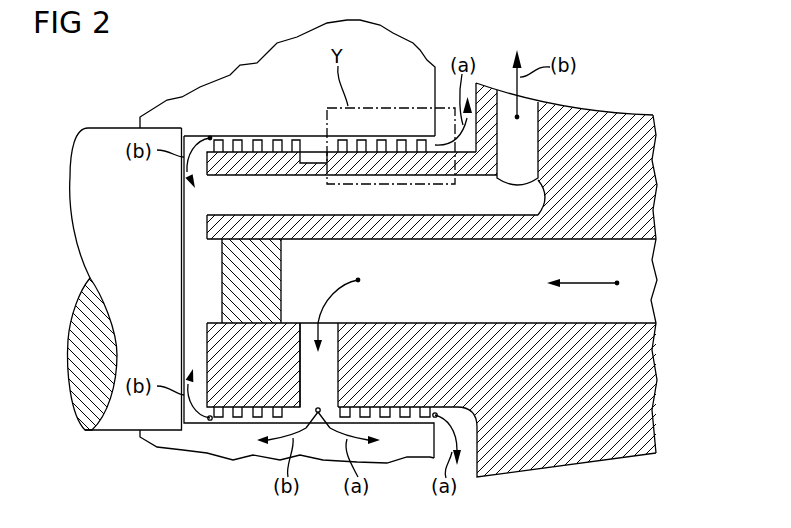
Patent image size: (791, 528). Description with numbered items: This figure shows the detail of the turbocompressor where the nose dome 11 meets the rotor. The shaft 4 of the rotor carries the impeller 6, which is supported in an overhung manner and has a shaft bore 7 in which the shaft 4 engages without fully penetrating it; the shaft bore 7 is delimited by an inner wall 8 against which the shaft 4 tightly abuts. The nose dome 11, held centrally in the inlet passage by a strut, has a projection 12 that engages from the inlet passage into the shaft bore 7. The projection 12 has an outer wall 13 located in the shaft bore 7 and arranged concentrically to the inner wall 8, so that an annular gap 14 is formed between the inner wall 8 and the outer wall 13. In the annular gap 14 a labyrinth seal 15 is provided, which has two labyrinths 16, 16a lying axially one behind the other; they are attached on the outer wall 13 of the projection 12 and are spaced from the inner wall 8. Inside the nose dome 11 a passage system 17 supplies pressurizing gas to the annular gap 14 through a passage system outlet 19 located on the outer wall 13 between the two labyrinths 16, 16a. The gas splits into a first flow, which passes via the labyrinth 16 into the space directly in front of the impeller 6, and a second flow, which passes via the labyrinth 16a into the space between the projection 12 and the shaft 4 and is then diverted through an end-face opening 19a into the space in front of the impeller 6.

The shaft 4 is at (71, 188).
The impeller 6 is at (257, 63).
The shaft bore 7 is at (283, 135).
The inner wall 8 is at (372, 195).
The nose dome 11 is at (653, 163).
The projection 12 is at (450, 367).
The outer wall 13 is at (414, 407).
The annular gap 14 is at (313, 148).
The labyrinth seal 15 is at (247, 141).
The labyrinth 16 is at (435, 145).
The labyrinth 16a is at (255, 140).
The passage system 17 is at (655, 295).
The passage system outlet 19 is at (312, 430).
The end-face opening 19a is at (212, 202).